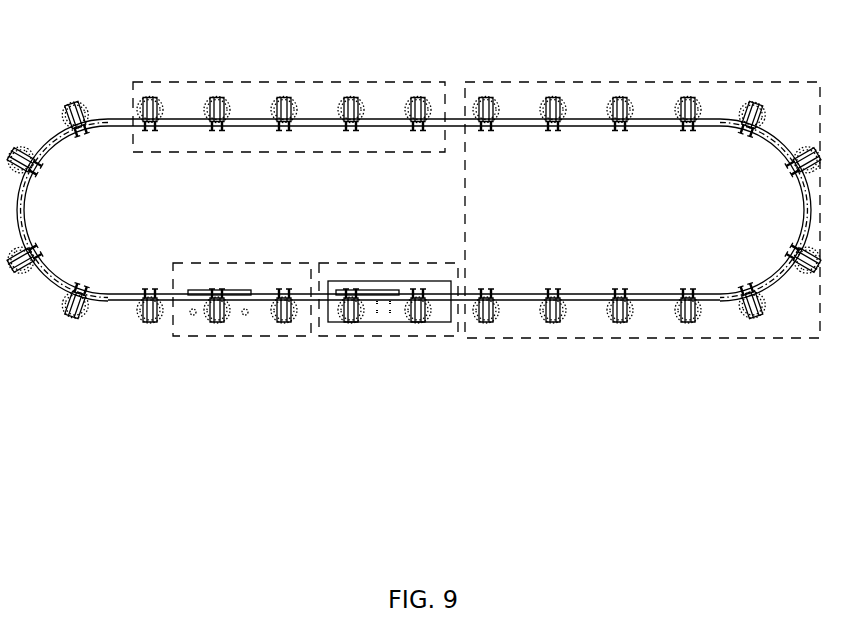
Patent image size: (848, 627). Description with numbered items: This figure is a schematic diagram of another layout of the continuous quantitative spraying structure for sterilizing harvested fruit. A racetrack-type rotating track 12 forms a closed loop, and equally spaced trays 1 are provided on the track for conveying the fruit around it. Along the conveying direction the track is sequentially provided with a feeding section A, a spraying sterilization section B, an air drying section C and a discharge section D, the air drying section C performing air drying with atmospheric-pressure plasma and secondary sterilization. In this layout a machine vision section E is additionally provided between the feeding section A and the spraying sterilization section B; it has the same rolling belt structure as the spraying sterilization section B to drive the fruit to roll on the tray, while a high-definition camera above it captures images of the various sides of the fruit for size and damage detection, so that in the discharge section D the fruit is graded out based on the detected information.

The tray 1 is at (72, 315).
The racetrack-type rotating track 12 is at (110, 118).
The feeding section A is at (159, 341).
The spraying sterilization section B is at (388, 333).
The air drying section C is at (642, 243).
The discharge section D is at (289, 104).
The region E is at (242, 333).